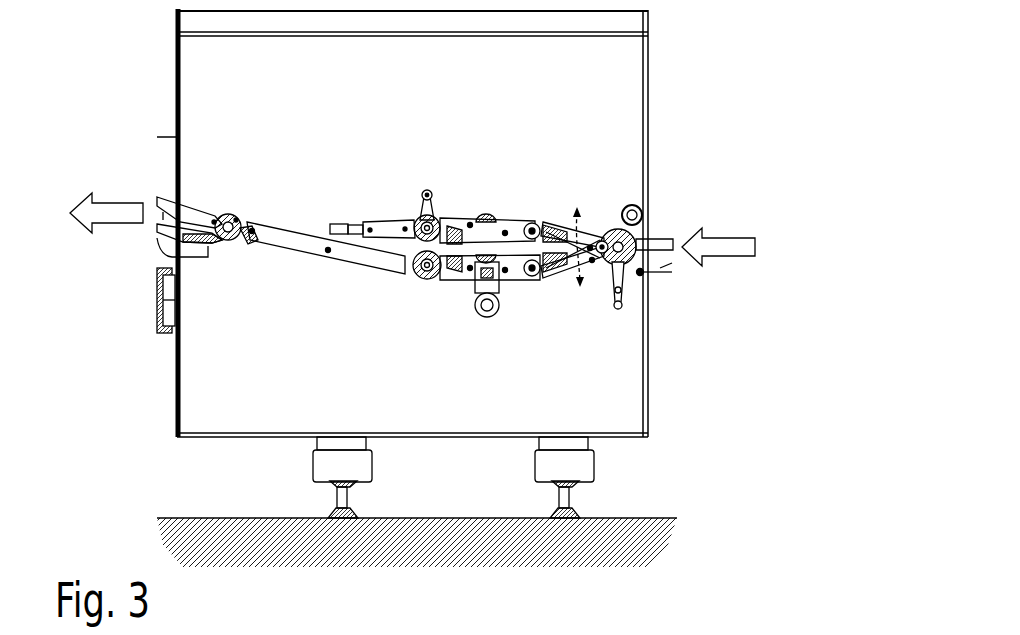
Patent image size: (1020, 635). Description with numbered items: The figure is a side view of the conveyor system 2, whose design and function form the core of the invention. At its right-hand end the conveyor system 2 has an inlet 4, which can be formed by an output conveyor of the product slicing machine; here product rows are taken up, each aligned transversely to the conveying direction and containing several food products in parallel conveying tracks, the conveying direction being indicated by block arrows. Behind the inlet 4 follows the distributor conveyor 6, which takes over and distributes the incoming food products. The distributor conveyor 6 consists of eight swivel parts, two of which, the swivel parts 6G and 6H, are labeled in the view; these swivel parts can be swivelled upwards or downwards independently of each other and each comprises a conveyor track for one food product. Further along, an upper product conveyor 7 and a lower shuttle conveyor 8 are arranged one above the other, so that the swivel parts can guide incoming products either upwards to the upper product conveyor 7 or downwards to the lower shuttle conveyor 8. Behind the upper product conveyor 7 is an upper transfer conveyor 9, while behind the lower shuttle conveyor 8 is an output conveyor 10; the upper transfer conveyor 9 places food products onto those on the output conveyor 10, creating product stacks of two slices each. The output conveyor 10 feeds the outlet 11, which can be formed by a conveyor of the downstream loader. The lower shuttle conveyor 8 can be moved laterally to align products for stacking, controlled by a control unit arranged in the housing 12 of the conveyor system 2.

The conveyor system 2 is at (140, 382).
The inlet 4 is at (667, 238).
The distributor conveyor 6 is at (585, 297).
The swivel part 6G is at (592, 238).
The swivel part 6H is at (592, 262).
The upper product conveyor 7 is at (487, 227).
The lower shuttle conveyor 8 is at (515, 270).
The upper transfer conveyor 9 is at (387, 222).
The output conveyor 10 is at (352, 260).
The outlet 11 is at (160, 237).
The housing 12 is at (205, 110).